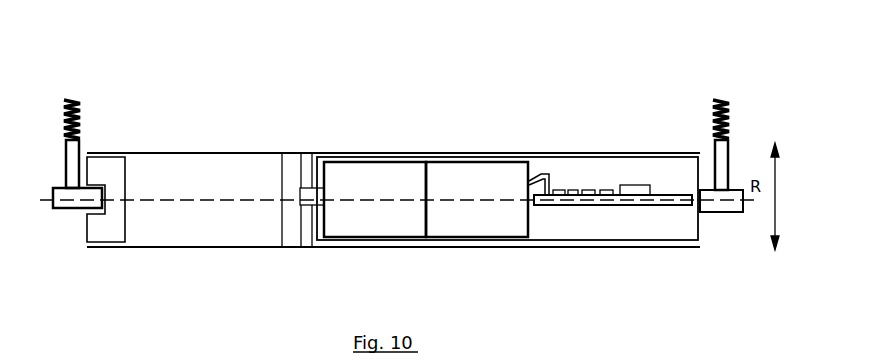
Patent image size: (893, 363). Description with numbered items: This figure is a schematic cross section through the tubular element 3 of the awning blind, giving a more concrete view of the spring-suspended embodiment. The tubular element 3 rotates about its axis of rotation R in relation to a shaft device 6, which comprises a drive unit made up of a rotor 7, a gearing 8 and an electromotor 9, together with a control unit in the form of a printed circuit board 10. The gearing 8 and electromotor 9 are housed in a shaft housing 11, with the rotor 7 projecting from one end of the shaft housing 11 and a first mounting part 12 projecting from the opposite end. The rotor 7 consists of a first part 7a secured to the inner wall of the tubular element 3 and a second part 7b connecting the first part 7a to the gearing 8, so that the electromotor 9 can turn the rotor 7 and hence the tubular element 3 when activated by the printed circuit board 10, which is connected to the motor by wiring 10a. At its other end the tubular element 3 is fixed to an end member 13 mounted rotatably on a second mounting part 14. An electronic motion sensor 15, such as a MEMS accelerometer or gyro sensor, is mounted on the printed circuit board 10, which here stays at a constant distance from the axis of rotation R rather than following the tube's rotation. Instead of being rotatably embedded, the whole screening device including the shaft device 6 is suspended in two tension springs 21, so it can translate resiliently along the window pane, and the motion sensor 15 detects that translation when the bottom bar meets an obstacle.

The tubular element 3 is at (351, 157).
The shaft device 6 is at (575, 162).
The rotor 7 is at (201, 156).
The first part of the rotor 7a is at (285, 173).
The second part of the rotor 7b is at (316, 196).
The gearing 8 is at (380, 180).
The electromotor 9 is at (493, 180).
The printed circuit board 10 is at (637, 207).
The wiring 10a is at (542, 175).
The shaft housing 11 is at (535, 241).
The first mounting part 12 is at (722, 205).
The end member 13 is at (107, 170).
The second mounting part 14 is at (50, 213).
The electronic motion sensor 15 is at (635, 188).
The tension springs 21 is at (63, 110).